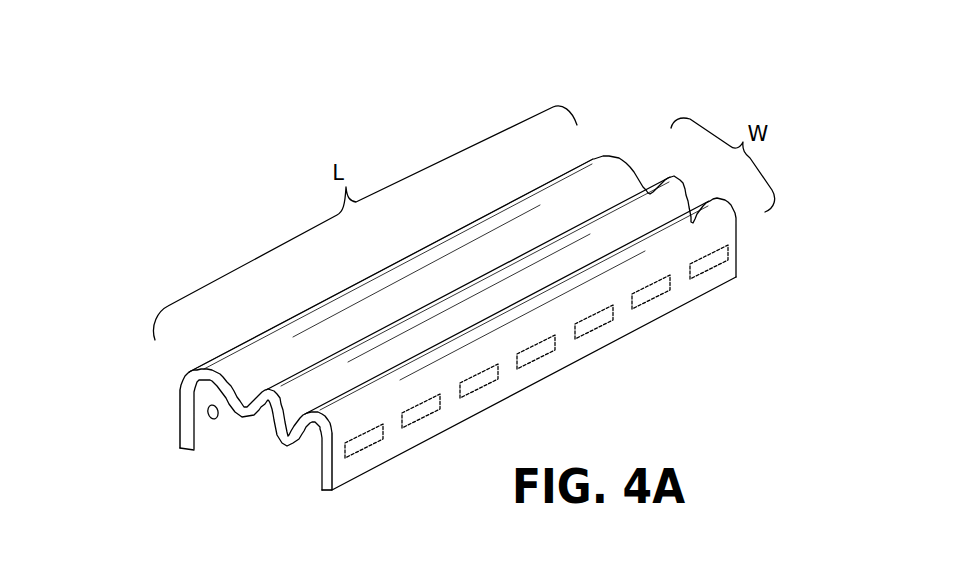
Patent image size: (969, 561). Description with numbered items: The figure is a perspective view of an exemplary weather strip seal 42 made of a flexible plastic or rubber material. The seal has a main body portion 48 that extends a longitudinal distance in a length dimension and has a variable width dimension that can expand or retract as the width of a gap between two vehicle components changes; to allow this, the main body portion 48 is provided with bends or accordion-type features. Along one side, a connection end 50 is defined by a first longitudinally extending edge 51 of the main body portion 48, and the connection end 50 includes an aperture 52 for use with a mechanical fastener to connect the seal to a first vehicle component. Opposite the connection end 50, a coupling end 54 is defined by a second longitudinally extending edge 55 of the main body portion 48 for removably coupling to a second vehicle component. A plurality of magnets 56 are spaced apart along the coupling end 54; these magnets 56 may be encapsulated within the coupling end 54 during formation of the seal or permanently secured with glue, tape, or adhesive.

The weather strip seal 42 is at (790, 81).
The main body portion 48 is at (643, 164).
The connection end 50 is at (180, 413).
The first longitudinally extending edge 51 is at (272, 326).
The aperture 52 is at (215, 419).
The coupling end 54 is at (340, 467).
The second longitudinally extending edge 55 is at (701, 203).
The magnets 56 is at (430, 415).